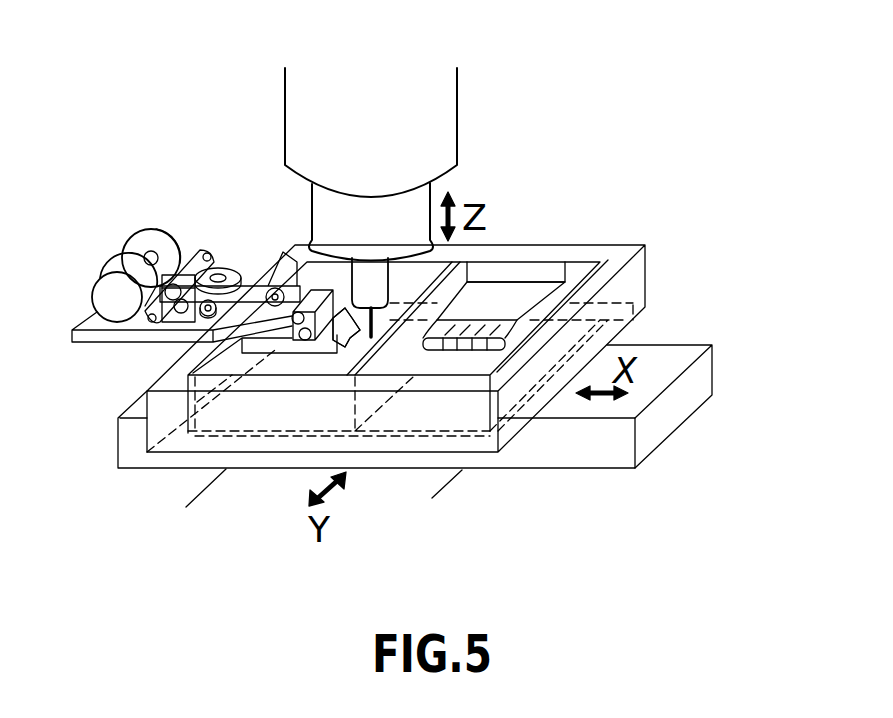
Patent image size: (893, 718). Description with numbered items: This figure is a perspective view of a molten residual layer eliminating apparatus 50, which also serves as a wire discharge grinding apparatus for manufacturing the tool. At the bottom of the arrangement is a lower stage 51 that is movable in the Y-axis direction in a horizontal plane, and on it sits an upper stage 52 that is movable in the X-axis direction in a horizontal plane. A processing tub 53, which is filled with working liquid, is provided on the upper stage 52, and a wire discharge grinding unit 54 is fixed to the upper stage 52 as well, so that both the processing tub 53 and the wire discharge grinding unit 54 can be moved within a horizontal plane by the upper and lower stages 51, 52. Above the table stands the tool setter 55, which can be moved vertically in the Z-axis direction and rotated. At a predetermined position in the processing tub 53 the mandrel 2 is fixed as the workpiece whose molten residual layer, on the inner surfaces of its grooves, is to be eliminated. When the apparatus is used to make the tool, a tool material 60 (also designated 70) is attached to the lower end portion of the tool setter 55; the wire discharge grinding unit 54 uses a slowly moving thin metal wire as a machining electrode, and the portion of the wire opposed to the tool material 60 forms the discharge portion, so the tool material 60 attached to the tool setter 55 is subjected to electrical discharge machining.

The component mounting apparatus 50 is at (184, 174).
The tool setter 55 is at (440, 132).
The tool material 60 is at (450, 262).
The mounting position (alternative) 70 is at (450, 262).
The mandrel 2 is at (523, 297).
The upper stage 52 is at (633, 289).
The lower stage 51 is at (593, 453).
The processing tub 53 is at (457, 373).
The wire discharge grinding unit 54 is at (113, 337).